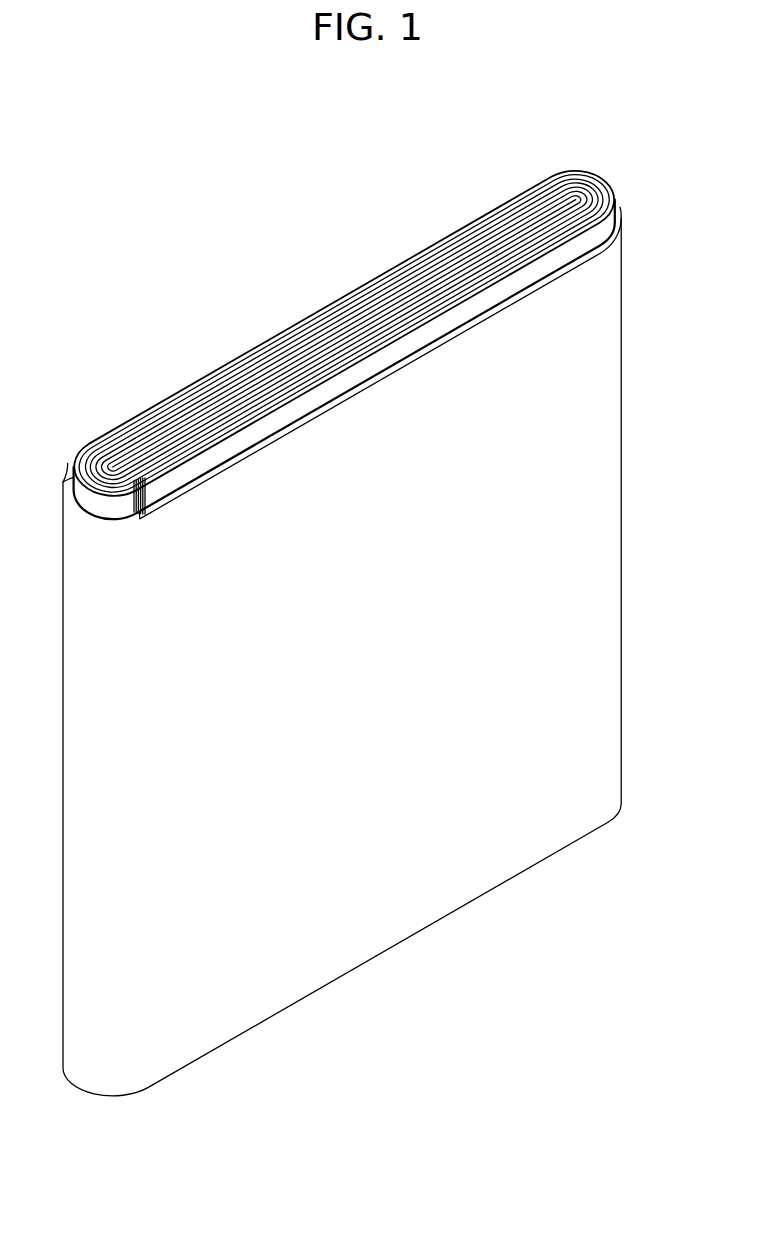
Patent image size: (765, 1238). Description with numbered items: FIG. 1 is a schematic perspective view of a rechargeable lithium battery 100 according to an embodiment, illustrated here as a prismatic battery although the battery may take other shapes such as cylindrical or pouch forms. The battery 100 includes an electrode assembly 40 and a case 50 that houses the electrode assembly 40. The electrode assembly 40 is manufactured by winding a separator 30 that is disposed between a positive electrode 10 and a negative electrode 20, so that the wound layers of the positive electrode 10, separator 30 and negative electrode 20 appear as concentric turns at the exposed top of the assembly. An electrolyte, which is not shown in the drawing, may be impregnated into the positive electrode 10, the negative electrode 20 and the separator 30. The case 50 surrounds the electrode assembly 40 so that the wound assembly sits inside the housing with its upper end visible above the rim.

The rechargeable lithium battery 100 is at (327, 104).
The positive electrode 10 is at (614, 198).
The negative electrode 20 is at (576, 189).
The separator 30 is at (597, 178).
The electrode assembly 40 is at (371, 314).
The case 50 is at (608, 497).